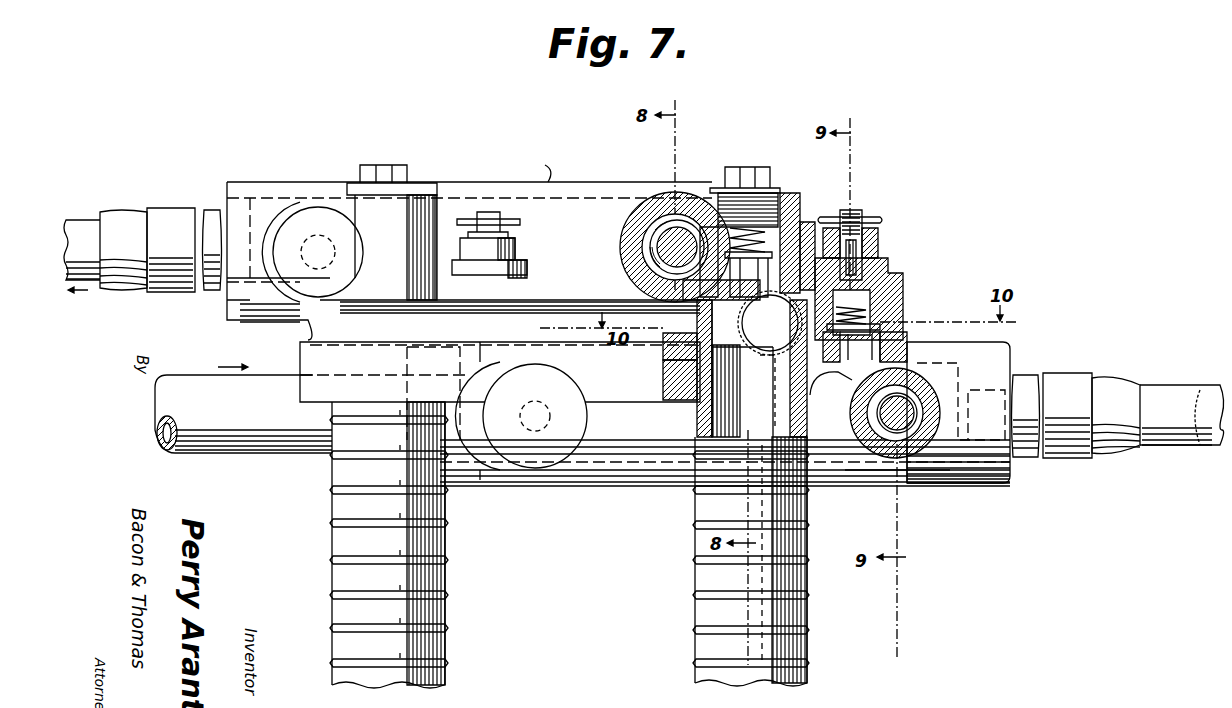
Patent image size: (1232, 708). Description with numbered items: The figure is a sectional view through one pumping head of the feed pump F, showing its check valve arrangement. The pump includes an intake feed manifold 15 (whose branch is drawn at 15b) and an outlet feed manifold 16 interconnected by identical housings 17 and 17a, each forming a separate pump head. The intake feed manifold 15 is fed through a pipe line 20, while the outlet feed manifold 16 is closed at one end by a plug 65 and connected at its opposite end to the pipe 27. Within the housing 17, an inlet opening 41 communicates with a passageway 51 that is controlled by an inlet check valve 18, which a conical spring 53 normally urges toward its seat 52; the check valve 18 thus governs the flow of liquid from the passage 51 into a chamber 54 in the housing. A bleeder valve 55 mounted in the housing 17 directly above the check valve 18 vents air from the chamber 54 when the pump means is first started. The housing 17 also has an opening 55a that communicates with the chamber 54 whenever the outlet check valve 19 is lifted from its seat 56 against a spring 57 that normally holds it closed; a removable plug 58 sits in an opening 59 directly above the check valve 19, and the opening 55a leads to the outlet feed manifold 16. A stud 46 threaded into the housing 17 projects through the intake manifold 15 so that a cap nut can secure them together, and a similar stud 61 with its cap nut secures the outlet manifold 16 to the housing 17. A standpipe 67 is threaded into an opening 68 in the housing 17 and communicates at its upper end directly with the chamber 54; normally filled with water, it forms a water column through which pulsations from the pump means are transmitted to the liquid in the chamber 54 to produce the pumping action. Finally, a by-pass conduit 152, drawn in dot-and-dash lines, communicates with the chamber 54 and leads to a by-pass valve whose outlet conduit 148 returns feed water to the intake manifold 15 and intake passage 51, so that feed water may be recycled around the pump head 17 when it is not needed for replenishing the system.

The intake feed manifold 15 is at (600, 484).
The vertical pipe (conduit 15 branch) 15b is at (389, 545).
The outlet feed manifold 16 is at (605, 190).
The housing 17 is at (904, 290).
The housing 17a is at (538, 332).
The inlet check valve 18 is at (882, 328).
The outlet check valve 19 is at (760, 318).
The pipe line 20 is at (240, 462).
The pipe 27 is at (73, 228).
The inlet opening 41 is at (918, 470).
The stud 46 is at (892, 396).
The passageway 51 is at (850, 402).
The seat 52 is at (908, 346).
The conical spring 53 is at (890, 308).
The chamber 54 is at (665, 352).
The bleeder valve 55 is at (880, 258).
The opening 55a is at (642, 235).
The seat 56 is at (742, 262).
The spring 57 is at (804, 254).
The removable plug 58 is at (760, 156).
The opening 59 is at (788, 201).
The stud 61 is at (665, 258).
The plug 65 is at (804, 222).
The standpipe 67 is at (808, 511).
The opening 68 is at (665, 380).
The by-pass conduit 148 is at (1188, 376).
The by-pass conduit 152 is at (760, 352).
The feed pump F is at (534, 167).